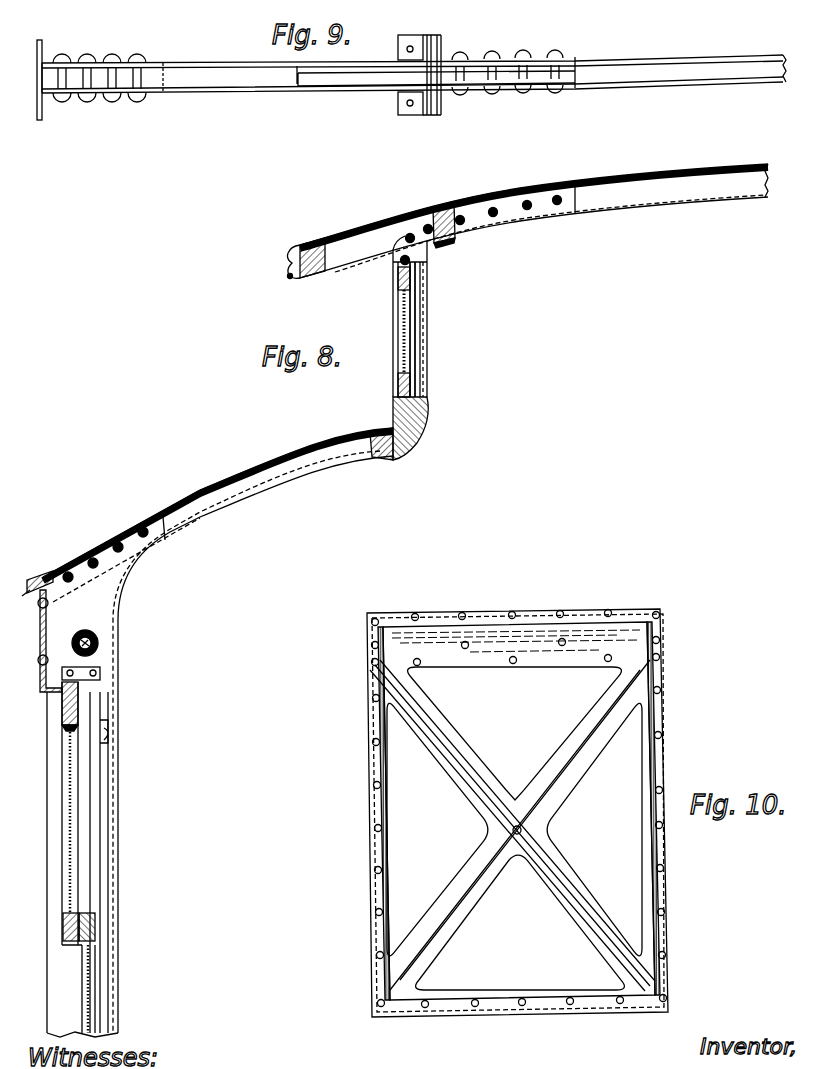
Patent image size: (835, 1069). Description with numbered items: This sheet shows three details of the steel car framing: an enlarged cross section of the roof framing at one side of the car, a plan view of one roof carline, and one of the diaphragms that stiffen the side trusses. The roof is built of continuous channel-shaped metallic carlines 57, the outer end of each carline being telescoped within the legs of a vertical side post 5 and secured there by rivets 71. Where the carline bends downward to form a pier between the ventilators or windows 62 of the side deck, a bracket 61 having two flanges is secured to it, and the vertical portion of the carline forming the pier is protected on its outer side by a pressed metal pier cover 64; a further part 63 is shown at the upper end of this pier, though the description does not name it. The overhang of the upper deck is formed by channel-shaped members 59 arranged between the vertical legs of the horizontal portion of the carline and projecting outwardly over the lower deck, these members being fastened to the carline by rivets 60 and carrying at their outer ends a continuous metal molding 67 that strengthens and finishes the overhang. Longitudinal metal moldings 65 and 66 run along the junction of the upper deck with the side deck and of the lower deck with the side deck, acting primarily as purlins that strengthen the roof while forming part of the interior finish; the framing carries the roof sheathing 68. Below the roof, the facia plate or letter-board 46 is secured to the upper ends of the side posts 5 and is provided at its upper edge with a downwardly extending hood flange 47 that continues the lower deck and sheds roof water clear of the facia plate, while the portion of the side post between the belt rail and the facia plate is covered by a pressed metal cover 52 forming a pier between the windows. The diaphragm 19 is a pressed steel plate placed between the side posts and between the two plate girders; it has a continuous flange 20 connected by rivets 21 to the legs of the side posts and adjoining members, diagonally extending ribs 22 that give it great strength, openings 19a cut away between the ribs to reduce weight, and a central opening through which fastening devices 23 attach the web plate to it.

In FIG. 9, the side posts 5 is at (70, 104).
In FIG. 8, the side posts 5 is at (122, 961).
In FIG. 9, the rivets 71 is at (138, 102).
In FIG. 8, the rivets 71 is at (143, 526).
In FIG. 9, the overhang members 59 is at (334, 84).
In FIG. 8, the overhang members 59 is at (336, 258).
In FIG. 9, the brackets 61 is at (416, 116).
In FIG. 8, the brackets 61 is at (430, 264).
In FIG. 9, the rivets 60 is at (522, 92).
In FIG. 8, the rivets 60 is at (528, 209).
In FIG. 9, the carlines 57 is at (662, 70).
In FIG. 8, the carlines 57 is at (534, 221).
In FIG. 8, the roof sheathing 68 is at (615, 181).
In FIG. 8, the molding 67 is at (295, 260).
In FIG. 8, the molding 65 is at (452, 243).
In FIG. 8, the filling block 63 is at (400, 281).
In FIG. 8, the pier covers 64 is at (398, 386).
In FIG. 8, the ventilators or windows 62 is at (420, 392).
In FIG. 8, the molding 66 is at (420, 441).
In FIG. 8, the hood flange 47 is at (30, 586).
In FIG. 8, the facia plate 46 is at (38, 664).
In FIG. 8, the pier covers 52 is at (55, 955).
In FIG. 10, the diaphragms 19 is at (378, 889).
In FIG. 10, the openings 19a is at (514, 828).
In FIG. 10, the flange 20 is at (368, 742).
In FIG. 10, the rivets 21 is at (620, 793).
In FIG. 10, the diagonally extending ribs 22 is at (446, 743).
In FIG. 10, the fastening devices 23 is at (517, 840).